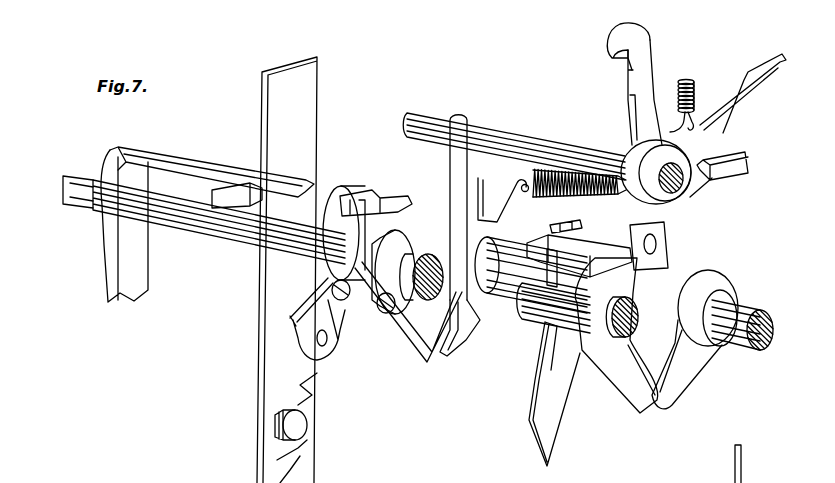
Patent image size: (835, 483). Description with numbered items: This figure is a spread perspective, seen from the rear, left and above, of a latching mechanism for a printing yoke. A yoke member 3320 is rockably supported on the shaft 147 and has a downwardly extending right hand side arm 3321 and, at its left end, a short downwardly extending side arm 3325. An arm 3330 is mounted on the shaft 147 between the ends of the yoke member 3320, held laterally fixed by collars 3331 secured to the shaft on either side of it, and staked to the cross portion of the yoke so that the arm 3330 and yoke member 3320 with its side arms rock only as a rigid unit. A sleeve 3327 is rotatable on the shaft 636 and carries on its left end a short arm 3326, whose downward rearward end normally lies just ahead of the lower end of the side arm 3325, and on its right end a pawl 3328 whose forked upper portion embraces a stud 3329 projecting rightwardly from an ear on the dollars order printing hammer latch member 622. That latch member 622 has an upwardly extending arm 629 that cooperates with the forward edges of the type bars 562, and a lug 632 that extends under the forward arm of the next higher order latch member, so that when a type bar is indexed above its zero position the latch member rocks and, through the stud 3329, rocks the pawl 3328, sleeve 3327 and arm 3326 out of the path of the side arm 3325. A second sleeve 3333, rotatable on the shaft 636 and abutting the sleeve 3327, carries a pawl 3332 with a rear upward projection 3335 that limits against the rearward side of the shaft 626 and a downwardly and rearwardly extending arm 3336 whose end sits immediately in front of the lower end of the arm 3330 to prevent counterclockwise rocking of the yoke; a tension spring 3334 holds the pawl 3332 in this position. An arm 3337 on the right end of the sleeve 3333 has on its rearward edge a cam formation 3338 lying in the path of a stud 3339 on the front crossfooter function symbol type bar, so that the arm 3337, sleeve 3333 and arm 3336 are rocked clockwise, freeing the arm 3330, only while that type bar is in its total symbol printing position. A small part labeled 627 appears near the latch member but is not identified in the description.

The type bars 562 is at (317, 108).
The shaft 147 is at (240, 236).
The yoke member 3320 is at (200, 160).
The right hand side arm 3321 is at (118, 282).
The collars 3331 is at (320, 247).
The sleeve 3333 is at (440, 227).
The pawl 3332 is at (494, 216).
The shaft 626 is at (420, 120).
The rear upward projection 3335 is at (460, 130).
The tension spring 3334 is at (565, 170).
The printing hammer latch member 622 is at (643, 150).
The upwardly extending arm 629 is at (620, 40).
The spring 627 is at (688, 80).
The lug 632 is at (746, 165).
The stud 3329 is at (662, 228).
The sleeve 3327 is at (656, 280).
The shaft 636 is at (767, 333).
The short arm 3326 is at (692, 365).
The side arm 3325 is at (648, 410).
The pawl 3328 is at (556, 392).
The arm 3336 is at (456, 338).
The arm 3330 is at (415, 346).
The arm 3337 is at (322, 347).
The stud 3339 is at (312, 422).
The cam formation 3338 is at (292, 320).